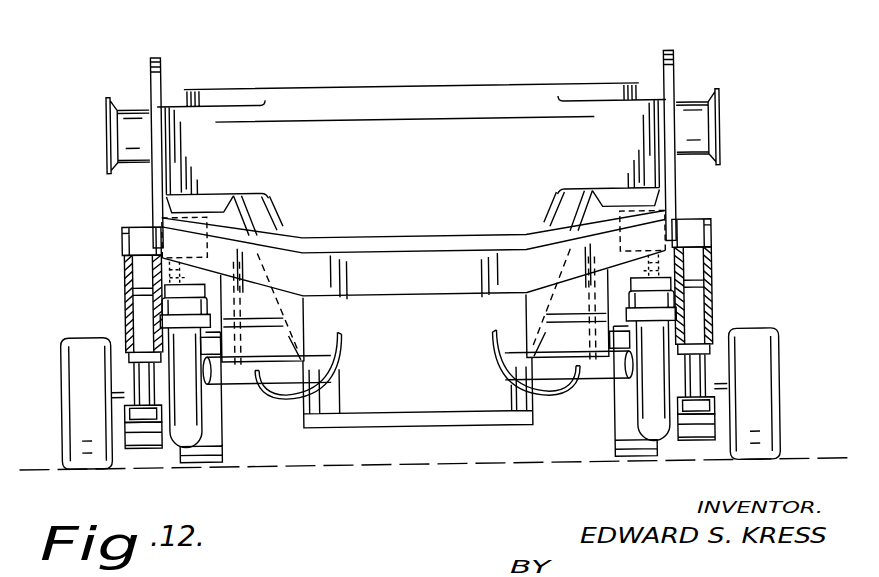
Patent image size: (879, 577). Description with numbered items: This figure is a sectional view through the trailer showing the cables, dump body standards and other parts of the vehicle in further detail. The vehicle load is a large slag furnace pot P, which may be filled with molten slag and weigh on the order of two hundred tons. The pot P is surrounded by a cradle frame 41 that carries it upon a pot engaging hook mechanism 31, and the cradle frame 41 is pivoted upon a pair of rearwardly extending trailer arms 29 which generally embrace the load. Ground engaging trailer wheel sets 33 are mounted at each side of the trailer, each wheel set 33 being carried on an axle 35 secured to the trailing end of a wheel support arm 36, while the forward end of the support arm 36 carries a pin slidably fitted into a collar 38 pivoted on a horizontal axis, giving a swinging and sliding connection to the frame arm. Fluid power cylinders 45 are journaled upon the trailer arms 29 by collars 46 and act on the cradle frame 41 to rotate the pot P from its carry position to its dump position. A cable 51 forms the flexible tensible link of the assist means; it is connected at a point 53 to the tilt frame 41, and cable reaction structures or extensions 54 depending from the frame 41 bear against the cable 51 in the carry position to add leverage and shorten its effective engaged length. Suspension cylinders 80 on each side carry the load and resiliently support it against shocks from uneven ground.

The slag furnace pot P is at (350, 106).
The rearwardly extending arms 29 is at (158, 294).
The pot engaging hook mechanism 31 is at (162, 97).
The ground engaging trailer wheel sets 33 is at (70, 350).
The axle 35 is at (116, 409).
The wheel support arm 36 is at (139, 450).
The collar 38 is at (231, 388).
The cradle frame 41 is at (371, 227).
The fluid power cylinders 45 is at (181, 436).
The collars 46 is at (160, 317).
The cable 51 is at (341, 340).
The connection point 53 is at (263, 267).
The cable reaction structures 54 is at (294, 356).
The suspension cylinders 80 is at (128, 228).